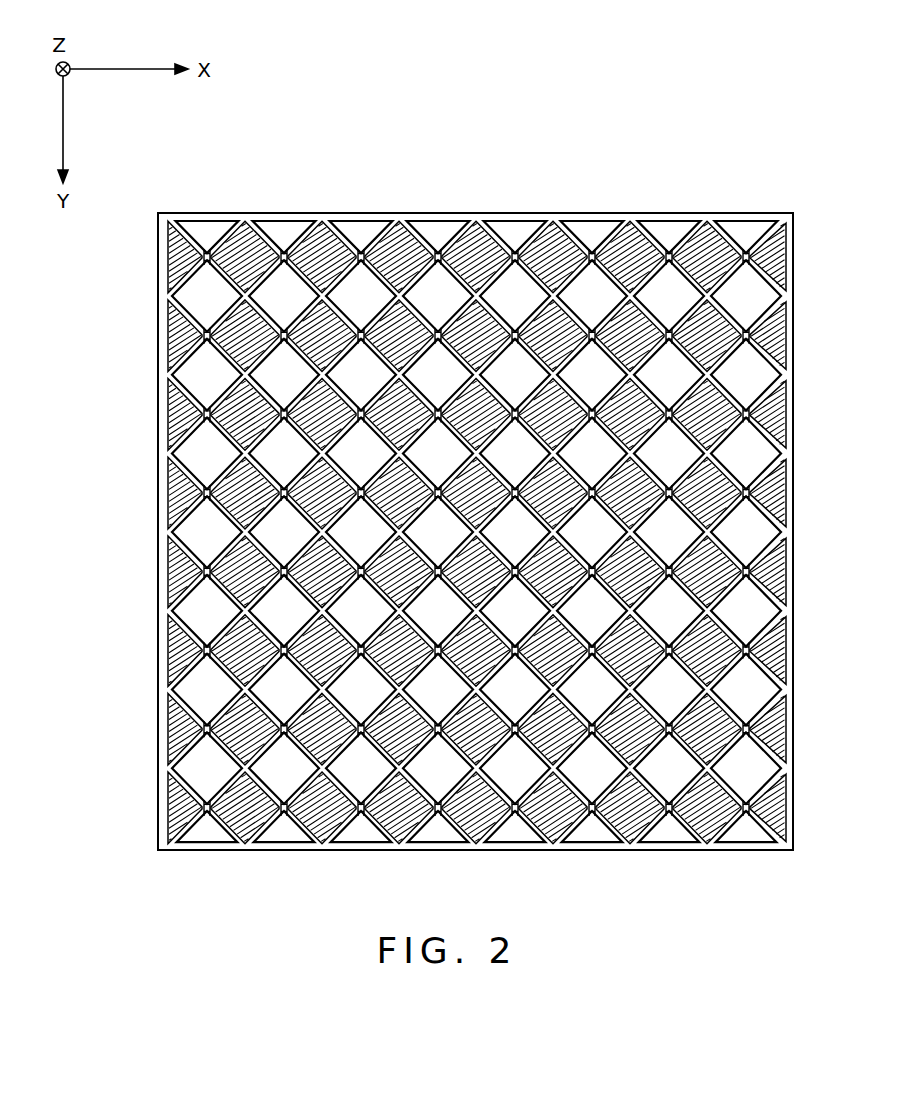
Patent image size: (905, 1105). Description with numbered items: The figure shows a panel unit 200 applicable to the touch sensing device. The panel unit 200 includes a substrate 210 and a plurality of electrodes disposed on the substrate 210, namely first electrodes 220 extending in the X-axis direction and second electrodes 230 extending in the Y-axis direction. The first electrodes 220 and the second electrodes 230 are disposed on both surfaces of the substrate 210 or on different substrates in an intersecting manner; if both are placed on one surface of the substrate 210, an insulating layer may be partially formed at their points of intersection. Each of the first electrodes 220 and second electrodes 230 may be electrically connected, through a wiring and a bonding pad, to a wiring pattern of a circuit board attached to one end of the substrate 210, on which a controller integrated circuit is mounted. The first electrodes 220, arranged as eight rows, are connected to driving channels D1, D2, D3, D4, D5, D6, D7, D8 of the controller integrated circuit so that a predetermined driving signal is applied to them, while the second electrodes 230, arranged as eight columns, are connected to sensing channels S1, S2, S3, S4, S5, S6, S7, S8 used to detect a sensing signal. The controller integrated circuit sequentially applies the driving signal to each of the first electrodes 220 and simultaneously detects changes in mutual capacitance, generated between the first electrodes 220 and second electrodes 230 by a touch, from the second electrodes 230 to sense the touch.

The panel unit 200 is at (581, 115).
The substrate 210 is at (163, 212).
The first electrodes 220 is at (170, 276).
The second electrodes 230 is at (220, 220).
The channel S1 is at (207, 213).
The channel S2 is at (284, 213).
The channel S3 is at (361, 213).
The channel S4 is at (438, 213).
The channel S5 is at (515, 213).
The channel S6 is at (592, 213).
The channel S7 is at (669, 213).
The channel S8 is at (746, 213).
The channel D1 is at (168, 257).
The channel D2 is at (168, 336).
The channel D3 is at (168, 414).
The channel D4 is at (168, 493).
The channel D5 is at (168, 572).
The channel D6 is at (168, 650).
The channel D7 is at (168, 729).
The channel D8 is at (168, 808).